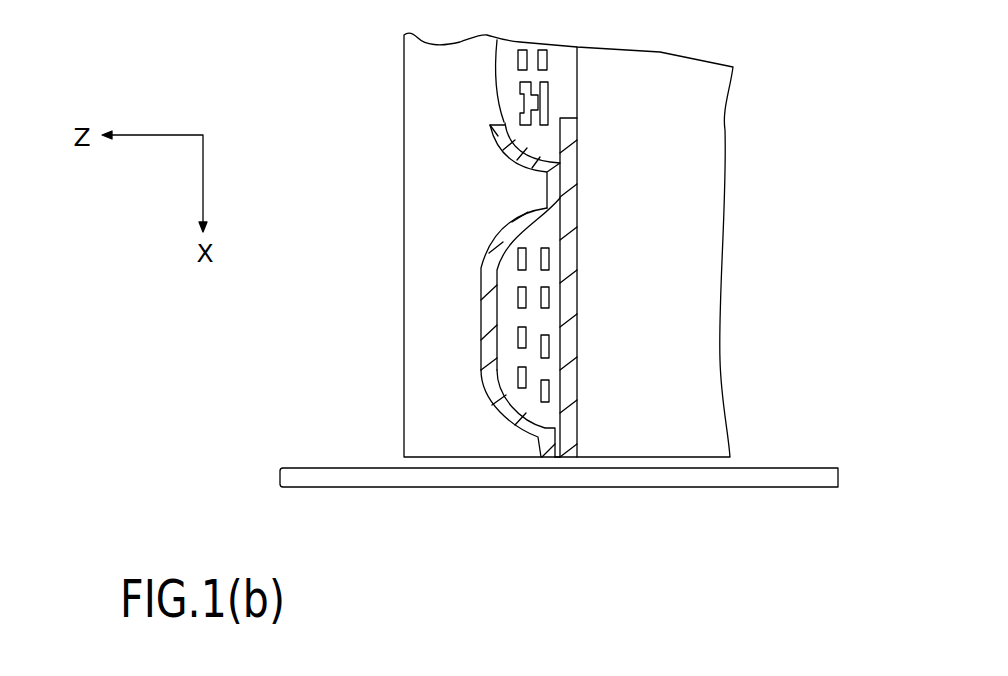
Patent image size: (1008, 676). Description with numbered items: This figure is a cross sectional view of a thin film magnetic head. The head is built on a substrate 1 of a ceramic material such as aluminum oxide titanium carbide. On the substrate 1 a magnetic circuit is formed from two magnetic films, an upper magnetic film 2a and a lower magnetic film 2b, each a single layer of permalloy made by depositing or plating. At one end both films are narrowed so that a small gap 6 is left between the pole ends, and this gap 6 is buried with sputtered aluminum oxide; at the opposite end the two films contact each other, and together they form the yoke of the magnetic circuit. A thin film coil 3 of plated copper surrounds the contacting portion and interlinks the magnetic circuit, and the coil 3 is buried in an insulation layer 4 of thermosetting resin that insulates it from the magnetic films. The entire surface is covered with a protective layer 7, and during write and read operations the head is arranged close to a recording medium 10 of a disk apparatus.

The substrate 1 is at (717, 262).
The upper magnetic film 2a is at (490, 345).
The lower magnetic film 2b is at (573, 233).
The thin film coil 3 is at (548, 345).
The insulation layer 4 is at (505, 283).
The gap 6 is at (560, 459).
The protective layer 7 is at (408, 70).
The recording medium 10 is at (780, 467).